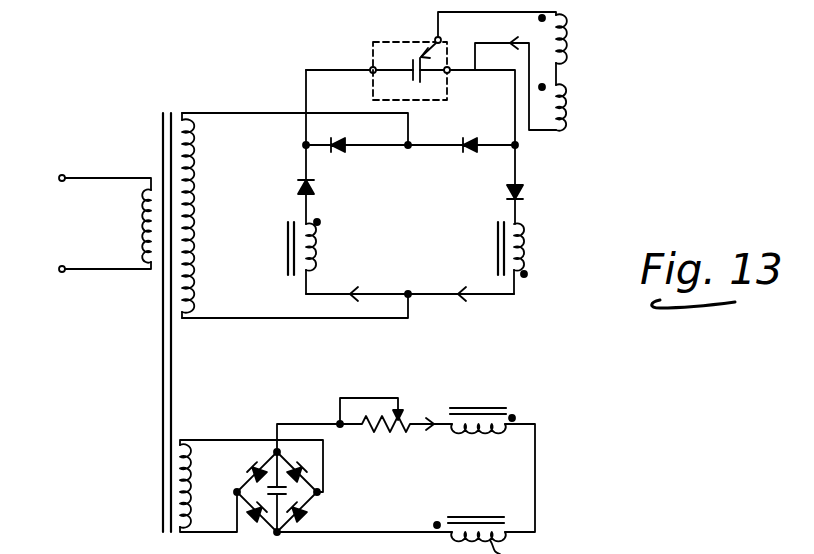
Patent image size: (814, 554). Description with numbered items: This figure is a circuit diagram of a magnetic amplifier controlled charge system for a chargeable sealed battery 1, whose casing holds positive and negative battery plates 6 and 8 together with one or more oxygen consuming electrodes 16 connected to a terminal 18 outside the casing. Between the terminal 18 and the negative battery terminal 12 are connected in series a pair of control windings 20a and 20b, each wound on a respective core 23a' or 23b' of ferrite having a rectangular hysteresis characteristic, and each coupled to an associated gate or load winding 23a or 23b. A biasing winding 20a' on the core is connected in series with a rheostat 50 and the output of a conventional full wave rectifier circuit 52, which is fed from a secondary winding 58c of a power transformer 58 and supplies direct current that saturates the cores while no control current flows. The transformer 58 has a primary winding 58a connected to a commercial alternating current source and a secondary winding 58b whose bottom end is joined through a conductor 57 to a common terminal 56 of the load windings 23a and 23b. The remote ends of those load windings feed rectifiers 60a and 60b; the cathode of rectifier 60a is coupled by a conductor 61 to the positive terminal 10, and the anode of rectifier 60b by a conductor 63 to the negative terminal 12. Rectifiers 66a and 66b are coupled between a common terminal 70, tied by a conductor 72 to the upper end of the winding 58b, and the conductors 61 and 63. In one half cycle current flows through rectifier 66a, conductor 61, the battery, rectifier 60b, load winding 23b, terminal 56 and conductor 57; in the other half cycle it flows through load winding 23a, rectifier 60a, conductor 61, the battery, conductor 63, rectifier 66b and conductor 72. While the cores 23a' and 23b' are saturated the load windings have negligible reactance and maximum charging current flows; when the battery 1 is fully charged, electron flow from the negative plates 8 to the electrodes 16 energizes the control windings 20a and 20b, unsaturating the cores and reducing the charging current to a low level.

The chargeable sealed battery 1 is at (369, 39).
The positive battery plate 6 is at (412, 73).
The negative battery plate 8 is at (433, 82).
The positive terminal 10 is at (371, 68).
The negative battery terminal 12 is at (450, 72).
The oxygen consuming electrode 16 is at (436, 38).
The terminal 18 is at (441, 39).
The control winding 20a is at (530, 49).
The control winding 20b is at (650, 108).
The biasing winding 20a' is at (472, 484).
The gate winding 23a is at (344, 256).
The core 23a' is at (383, 318).
The gate winding 23b is at (550, 258).
The core 23b' is at (456, 372).
The rheostat 50 is at (379, 422).
The full wave rectifier circuit 52 is at (247, 457).
The common terminal 56 is at (408, 291).
The conductor 57 is at (263, 319).
The power transformer 58 is at (169, 112).
The primary winding 58a is at (147, 195).
The secondary winding 58b is at (267, 211).
The secondary winding 58c is at (192, 515).
The rectifier 60a is at (381, 224).
The rectifier 60b is at (604, 219).
The conductor 61 is at (305, 83).
The conductor 63 is at (518, 135).
The rectifier 66a is at (379, 200).
The rectifier 66b is at (470, 151).
The common terminal 70 is at (408, 150).
The conductor 72 is at (263, 112).